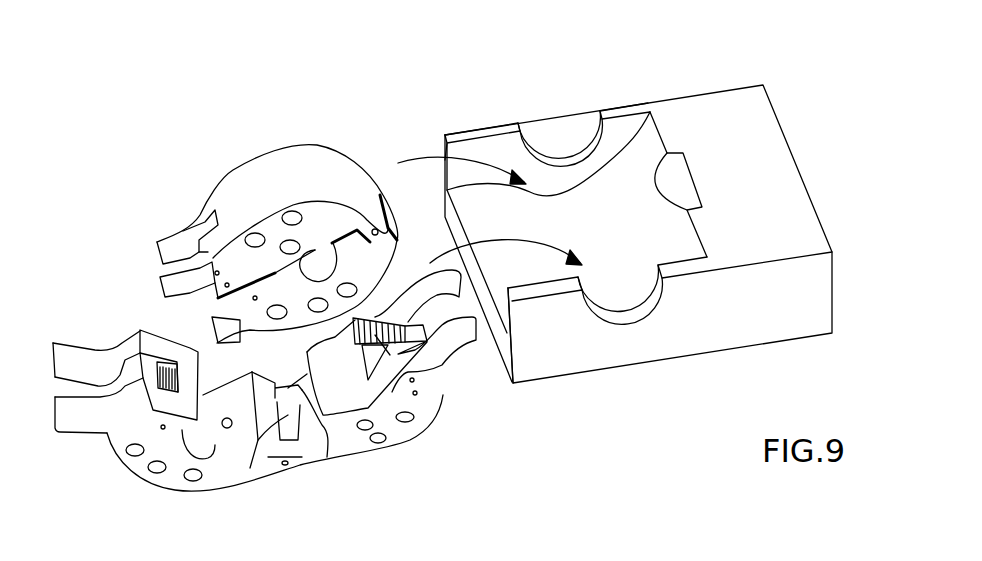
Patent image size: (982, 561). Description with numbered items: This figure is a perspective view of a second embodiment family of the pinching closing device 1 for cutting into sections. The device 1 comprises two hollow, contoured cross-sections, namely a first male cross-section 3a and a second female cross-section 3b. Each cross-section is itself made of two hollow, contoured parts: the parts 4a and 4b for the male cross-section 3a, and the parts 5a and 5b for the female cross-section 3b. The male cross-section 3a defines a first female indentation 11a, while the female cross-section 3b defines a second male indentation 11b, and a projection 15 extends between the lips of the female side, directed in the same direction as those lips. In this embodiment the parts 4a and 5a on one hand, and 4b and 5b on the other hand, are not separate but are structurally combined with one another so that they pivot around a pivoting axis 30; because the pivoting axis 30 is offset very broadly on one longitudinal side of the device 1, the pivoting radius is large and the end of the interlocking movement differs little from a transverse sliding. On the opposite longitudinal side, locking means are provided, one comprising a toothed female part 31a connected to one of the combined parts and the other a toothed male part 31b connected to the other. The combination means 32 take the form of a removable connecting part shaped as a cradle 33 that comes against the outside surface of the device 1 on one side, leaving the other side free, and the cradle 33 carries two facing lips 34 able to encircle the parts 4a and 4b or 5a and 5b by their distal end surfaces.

The pinching closing device 1 is at (798, 136).
The combination means 32 is at (464, 146).
The cradle 33 is at (607, 185).
The lips 34 is at (505, 128).
The first male cross-section 3a is at (222, 328).
The second female cross-section 3b is at (320, 192).
The part 4a is at (204, 396).
The part 4b is at (297, 310).
The part 5a is at (287, 172).
The part 5b is at (365, 447).
The first female indentation 11a is at (208, 398).
The second male indentation 11b is at (302, 393).
The projection 15 is at (335, 425).
The pivoting axis 30 is at (368, 190).
The female part 31a is at (170, 372).
The male part 31b is at (388, 346).